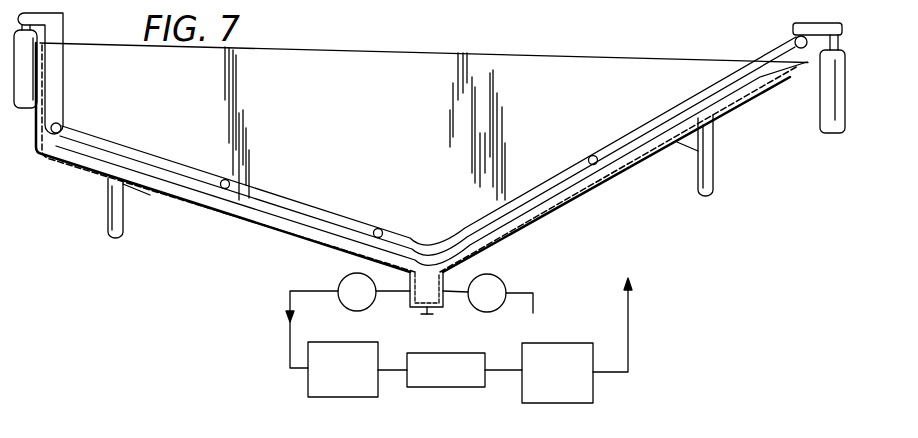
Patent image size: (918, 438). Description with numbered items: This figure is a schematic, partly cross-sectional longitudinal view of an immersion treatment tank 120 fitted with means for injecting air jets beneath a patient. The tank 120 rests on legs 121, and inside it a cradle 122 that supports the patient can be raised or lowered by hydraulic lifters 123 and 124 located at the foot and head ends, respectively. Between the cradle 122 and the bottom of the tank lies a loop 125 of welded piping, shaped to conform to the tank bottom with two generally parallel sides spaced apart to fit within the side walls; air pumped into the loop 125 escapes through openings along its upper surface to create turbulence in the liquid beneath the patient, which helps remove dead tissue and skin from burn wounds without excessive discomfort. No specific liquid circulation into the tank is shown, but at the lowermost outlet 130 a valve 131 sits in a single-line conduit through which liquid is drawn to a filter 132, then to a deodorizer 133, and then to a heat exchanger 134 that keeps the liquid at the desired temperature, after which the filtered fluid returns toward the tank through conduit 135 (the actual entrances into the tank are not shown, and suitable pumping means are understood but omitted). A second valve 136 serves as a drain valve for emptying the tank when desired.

The tank 120 is at (636, 53).
The legs 121 is at (105, 200).
The cradle 122 is at (300, 202).
The hydraulic lifter 123 is at (58, 14).
The hydraulic lifter 124 is at (793, 29).
The loop 125 is at (616, 172).
The lowermost outlet 130 is at (447, 304).
The valve 131 is at (341, 279).
The filter 132 is at (337, 399).
The deodorizer 133 is at (443, 389).
The heat exchanger 134 is at (557, 404).
The conduit 135 is at (631, 313).
The drain valve 136 is at (504, 282).